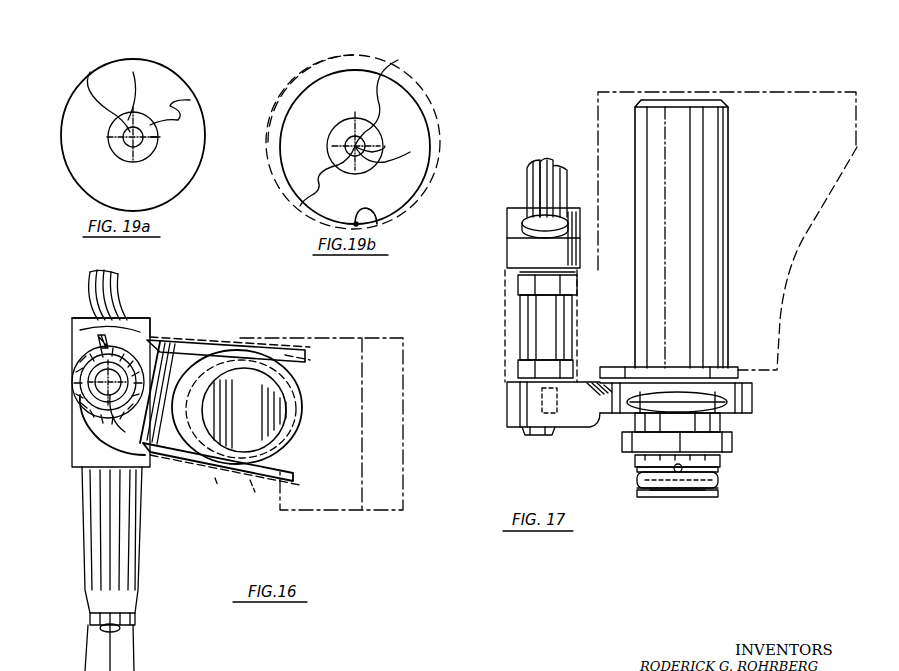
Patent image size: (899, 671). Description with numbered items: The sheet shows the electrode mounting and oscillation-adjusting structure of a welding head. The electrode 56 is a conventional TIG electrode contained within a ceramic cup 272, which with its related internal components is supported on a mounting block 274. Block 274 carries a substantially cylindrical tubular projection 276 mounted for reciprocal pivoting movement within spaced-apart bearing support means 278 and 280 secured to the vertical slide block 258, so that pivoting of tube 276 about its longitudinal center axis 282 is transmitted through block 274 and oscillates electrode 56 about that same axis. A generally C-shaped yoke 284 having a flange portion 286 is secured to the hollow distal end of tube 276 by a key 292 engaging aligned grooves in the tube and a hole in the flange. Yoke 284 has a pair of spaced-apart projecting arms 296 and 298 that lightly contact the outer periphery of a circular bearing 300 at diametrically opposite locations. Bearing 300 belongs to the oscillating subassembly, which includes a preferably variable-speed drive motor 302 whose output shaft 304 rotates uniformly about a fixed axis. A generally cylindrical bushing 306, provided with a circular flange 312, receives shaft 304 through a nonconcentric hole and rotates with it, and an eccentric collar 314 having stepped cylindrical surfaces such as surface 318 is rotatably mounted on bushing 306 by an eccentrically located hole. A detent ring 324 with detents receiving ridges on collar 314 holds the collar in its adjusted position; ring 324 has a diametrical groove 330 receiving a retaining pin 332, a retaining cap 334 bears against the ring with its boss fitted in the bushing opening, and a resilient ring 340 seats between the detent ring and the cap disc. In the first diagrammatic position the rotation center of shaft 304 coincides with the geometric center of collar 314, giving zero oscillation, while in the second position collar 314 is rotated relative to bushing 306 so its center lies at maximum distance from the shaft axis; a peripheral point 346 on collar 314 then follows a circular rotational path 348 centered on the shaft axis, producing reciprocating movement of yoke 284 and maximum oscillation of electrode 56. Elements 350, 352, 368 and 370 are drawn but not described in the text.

In FIG. 16, the electrode 56 is at (120, 630).
In FIG. 16, the vertical slide block 258 is at (335, 508).
In FIG. 17, the vertical slide block 258 is at (775, 316).
In FIG. 16, the ceramic cup 272 is at (133, 538).
In FIG. 16, the mounting block 274 is at (134, 328).
In FIG. 17, the mounting block 274 is at (512, 252).
In FIG. 16, the tubular projection 276 is at (84, 424).
In FIG. 17, the tubular projection 276 is at (530, 332).
In FIG. 17, the bearing support means 278 is at (528, 370).
In FIG. 17, the bearing support means 280 is at (525, 285).
In FIG. 16, the longitudinal center axis 282 is at (88, 392).
In FIG. 16, the C-shaped yoke 284 is at (176, 344).
In FIG. 16, the flange portion 286 is at (80, 372).
In FIG. 16, the key 292 is at (98, 322).
In FIG. 17, the key 292 is at (522, 430).
In FIG. 16, the projecting arm 296 is at (285, 350).
In FIG. 17, the projecting arm 296 is at (752, 395).
In FIG. 16, the projecting arm 298 is at (250, 482).
In FIG. 16, the circular bearing 300 is at (300, 408).
In FIG. 17, the circular bearing 300 is at (735, 412).
In FIG. 17, the drive motor 302 is at (683, 105).
In FIG. 19A, the output shaft 304 is at (90, 72).
In FIG. 19B, the output shaft 304 is at (398, 60).
In FIG. 19A, the cylindrical bushing 306 is at (158, 137).
In FIG. 19B, the cylindrical bushing 306 is at (300, 206).
In FIG. 17, the circular flange 312 is at (708, 390).
In FIG. 19A, the eccentric collar 314 is at (133, 72).
In FIG. 19B, the eccentric collar 314 is at (412, 128).
In FIG. 17, the eccentric collar 314 is at (628, 455).
In FIG. 17, the stepped cylindrical surface 318 is at (628, 424).
In FIG. 17, the detent ring 324 is at (722, 460).
In FIG. 17, the diametrical groove 330 is at (655, 470).
In FIG. 17, the retaining pin 332 is at (672, 494).
In FIG. 17, the retaining cap 334 is at (720, 497).
In FIG. 17, the resilient ring 340 is at (720, 486).
In FIG. 19B, the peripheral point 346 is at (374, 224).
In FIG. 19B, the circular rotational path 348 is at (345, 50).
In FIG. 17, the cable bundle 350 is at (530, 168).
In FIG. 17, the cable 352 is at (594, 142).
In FIG. 19B, the third cam segment 368 is at (410, 152).
In FIG. 19A, the hook segment 370 is at (190, 100).